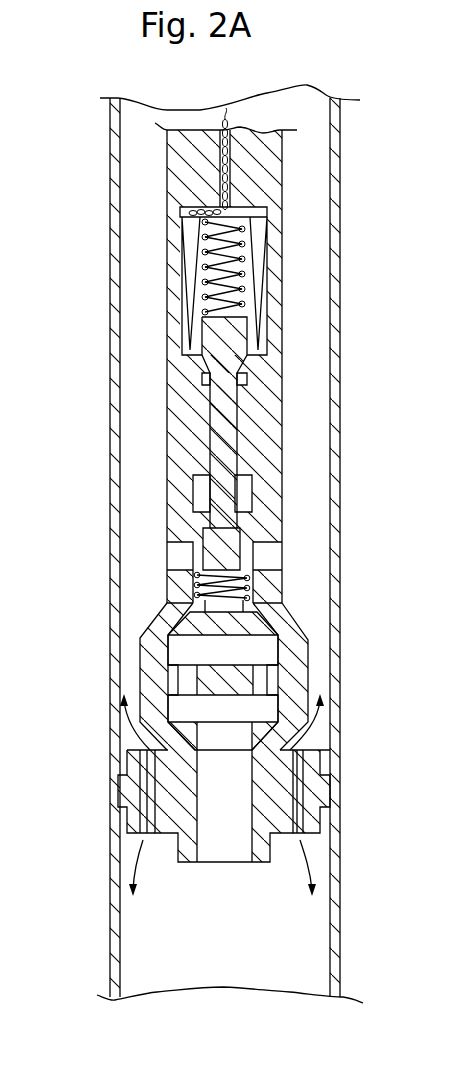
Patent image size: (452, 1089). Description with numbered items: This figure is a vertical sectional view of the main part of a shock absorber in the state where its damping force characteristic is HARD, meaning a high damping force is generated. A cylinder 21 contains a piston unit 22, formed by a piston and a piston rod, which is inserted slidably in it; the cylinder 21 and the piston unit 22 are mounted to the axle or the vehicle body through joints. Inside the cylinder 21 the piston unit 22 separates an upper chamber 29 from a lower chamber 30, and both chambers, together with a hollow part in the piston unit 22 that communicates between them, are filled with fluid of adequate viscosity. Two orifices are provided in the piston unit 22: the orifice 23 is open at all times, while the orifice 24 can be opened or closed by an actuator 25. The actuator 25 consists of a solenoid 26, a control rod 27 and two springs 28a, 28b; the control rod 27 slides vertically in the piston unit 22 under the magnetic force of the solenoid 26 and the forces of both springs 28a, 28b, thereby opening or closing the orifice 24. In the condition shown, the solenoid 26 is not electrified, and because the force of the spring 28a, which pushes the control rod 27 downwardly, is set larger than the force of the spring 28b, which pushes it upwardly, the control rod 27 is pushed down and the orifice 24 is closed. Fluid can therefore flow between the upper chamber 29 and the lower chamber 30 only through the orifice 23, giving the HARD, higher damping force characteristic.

The cylinder 21 is at (340, 323).
The piston unit 22 is at (308, 658).
The orifice 23 is at (303, 787).
The orifice 24 is at (178, 652).
The actuator 25 is at (248, 374).
The solenoid 26 is at (273, 257).
The control rod 27 is at (230, 440).
The spring 28a is at (200, 277).
The spring 28b is at (192, 592).
The upper chamber 29 is at (324, 508).
The lower chamber 30 is at (240, 955).